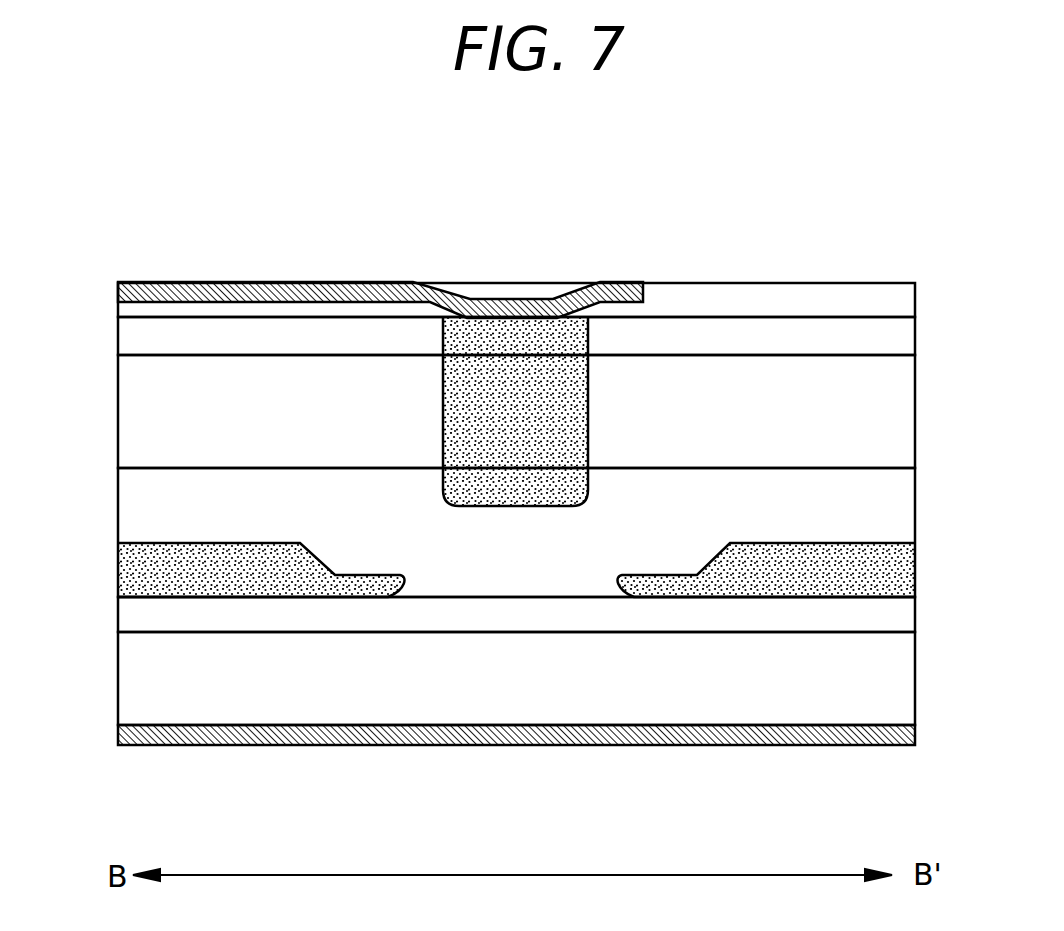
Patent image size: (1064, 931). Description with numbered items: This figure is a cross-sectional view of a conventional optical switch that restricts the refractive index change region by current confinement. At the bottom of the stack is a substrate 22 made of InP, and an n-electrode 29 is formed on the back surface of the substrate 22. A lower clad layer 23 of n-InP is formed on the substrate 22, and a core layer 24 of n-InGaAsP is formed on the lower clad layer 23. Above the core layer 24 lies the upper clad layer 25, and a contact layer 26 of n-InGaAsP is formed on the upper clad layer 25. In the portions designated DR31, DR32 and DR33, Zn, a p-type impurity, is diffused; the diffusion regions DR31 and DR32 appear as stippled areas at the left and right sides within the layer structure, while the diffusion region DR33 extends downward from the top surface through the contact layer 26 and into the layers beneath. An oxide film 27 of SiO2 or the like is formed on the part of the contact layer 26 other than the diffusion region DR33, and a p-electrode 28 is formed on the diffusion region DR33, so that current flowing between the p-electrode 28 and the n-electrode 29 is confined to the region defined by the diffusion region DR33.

The substrate 22 is at (915, 678).
The lower clad layer 23 is at (915, 612).
The core layer 24 is at (915, 505).
The upper clad layer 25 is at (915, 410).
The contact layer 26 is at (915, 334).
The oxide film 27 is at (915, 295).
The p-electrode 28 is at (191, 282).
The n-electrode 29 is at (915, 733).
The diffusion region DR31 is at (790, 553).
The diffusion region DR32 is at (261, 552).
The diffusion region DR33 is at (508, 387).